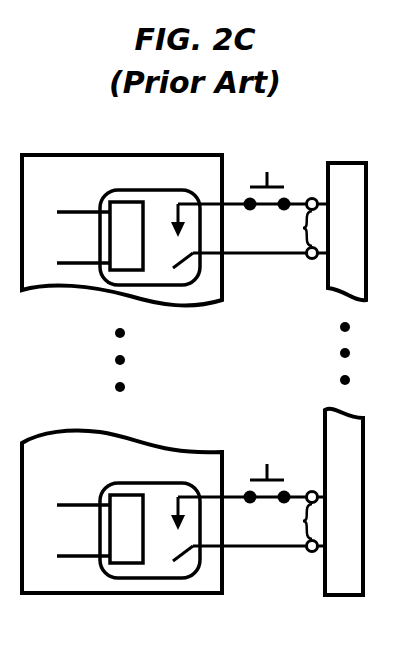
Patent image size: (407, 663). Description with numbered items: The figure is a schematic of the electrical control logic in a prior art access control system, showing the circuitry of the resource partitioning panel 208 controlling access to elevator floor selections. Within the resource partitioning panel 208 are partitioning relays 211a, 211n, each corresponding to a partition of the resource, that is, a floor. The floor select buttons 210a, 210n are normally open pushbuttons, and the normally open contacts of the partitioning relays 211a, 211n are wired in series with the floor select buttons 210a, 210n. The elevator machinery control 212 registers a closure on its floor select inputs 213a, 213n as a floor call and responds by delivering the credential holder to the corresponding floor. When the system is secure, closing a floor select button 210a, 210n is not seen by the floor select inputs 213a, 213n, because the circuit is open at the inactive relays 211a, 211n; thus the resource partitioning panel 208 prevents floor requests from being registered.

The resource partitioning panel 208 is at (42, 150).
The floor select button 210a is at (267, 164).
The floor select button 210n is at (267, 456).
The partitioning relay 211a is at (134, 187).
The partitioning relay 211n is at (172, 479).
The elevator machinery control 212 is at (347, 159).
The floor select input 213a is at (280, 229).
The floor select input 213n is at (278, 522).